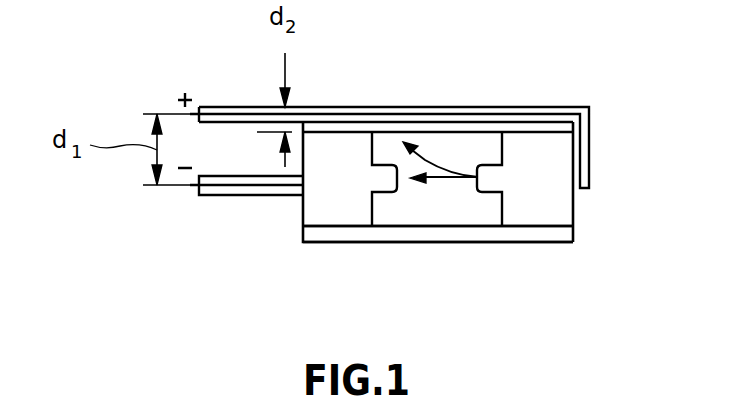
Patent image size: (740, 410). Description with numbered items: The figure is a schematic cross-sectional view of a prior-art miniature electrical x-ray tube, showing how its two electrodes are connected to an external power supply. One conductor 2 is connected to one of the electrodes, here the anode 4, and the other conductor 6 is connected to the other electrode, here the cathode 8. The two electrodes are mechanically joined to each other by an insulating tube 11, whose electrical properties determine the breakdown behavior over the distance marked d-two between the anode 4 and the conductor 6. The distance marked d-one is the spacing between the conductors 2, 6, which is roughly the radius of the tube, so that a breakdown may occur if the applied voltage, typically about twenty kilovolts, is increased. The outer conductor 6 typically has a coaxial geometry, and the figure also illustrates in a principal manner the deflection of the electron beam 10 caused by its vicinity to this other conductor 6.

The conductor 2 is at (210, 195).
The anode 4 is at (322, 198).
The conductor 6 is at (220, 107).
The cathode 8 is at (550, 197).
The electron beam 10 is at (440, 163).
The insulating tube 11 is at (413, 236).